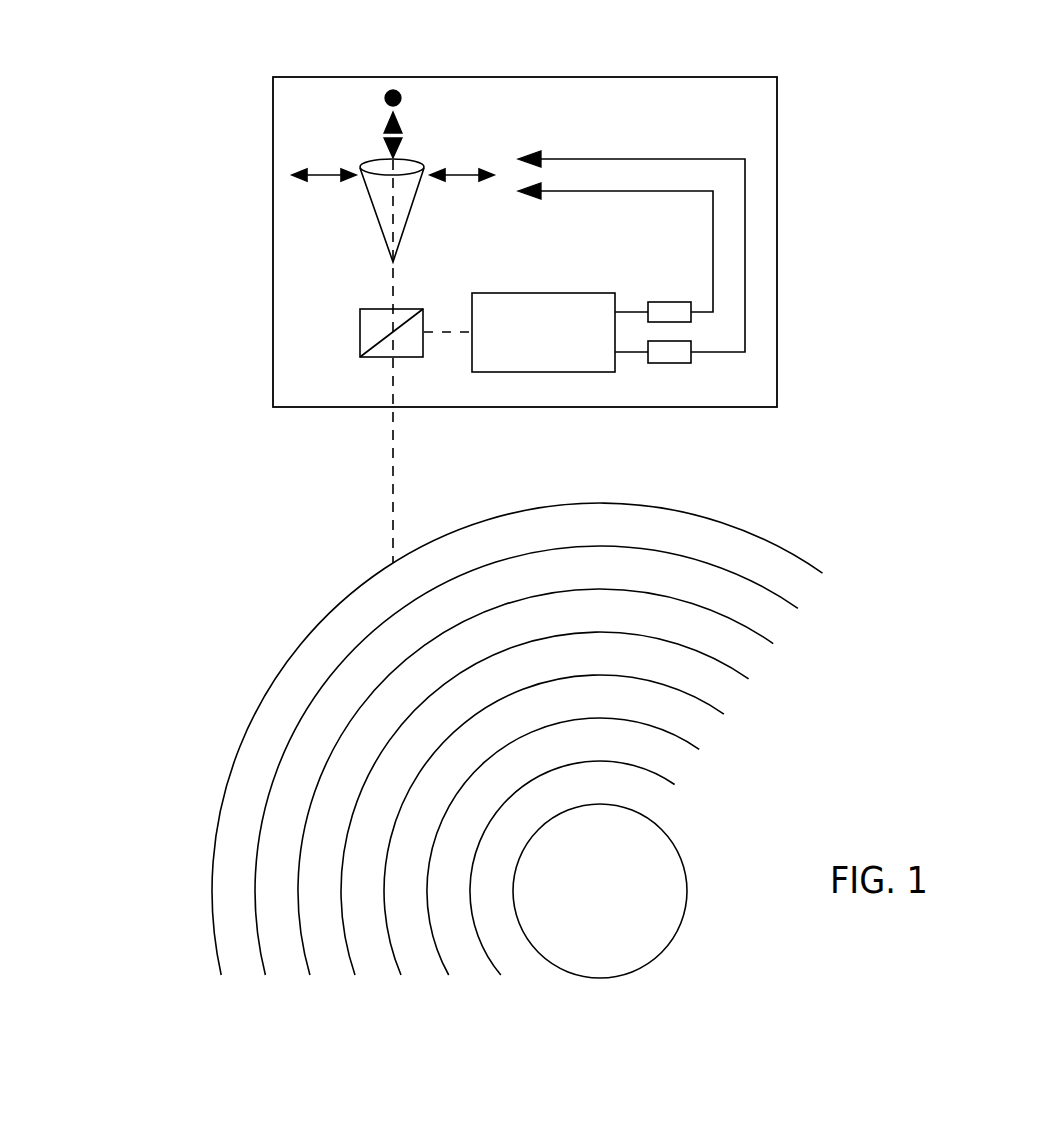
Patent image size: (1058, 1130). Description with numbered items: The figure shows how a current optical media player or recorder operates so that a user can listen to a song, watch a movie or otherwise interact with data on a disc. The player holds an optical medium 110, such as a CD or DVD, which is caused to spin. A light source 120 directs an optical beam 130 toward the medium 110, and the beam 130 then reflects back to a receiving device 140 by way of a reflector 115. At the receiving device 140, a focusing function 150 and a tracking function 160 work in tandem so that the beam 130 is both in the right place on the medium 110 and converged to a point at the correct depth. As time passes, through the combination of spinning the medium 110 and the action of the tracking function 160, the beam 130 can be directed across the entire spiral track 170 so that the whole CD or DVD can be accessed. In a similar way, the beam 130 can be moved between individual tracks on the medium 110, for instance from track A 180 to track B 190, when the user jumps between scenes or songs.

The optical medium 110 is at (212, 921).
The reflector 115 is at (360, 333).
The light source 120 is at (392, 88).
The optical beam 130 is at (393, 513).
The receiving device 140 is at (543, 331).
The focusing function 150 is at (669, 363).
The tracking function 160 is at (672, 302).
The spiral track 170 is at (262, 810).
The track A 180 is at (340, 735).
The track B 190 is at (437, 945).